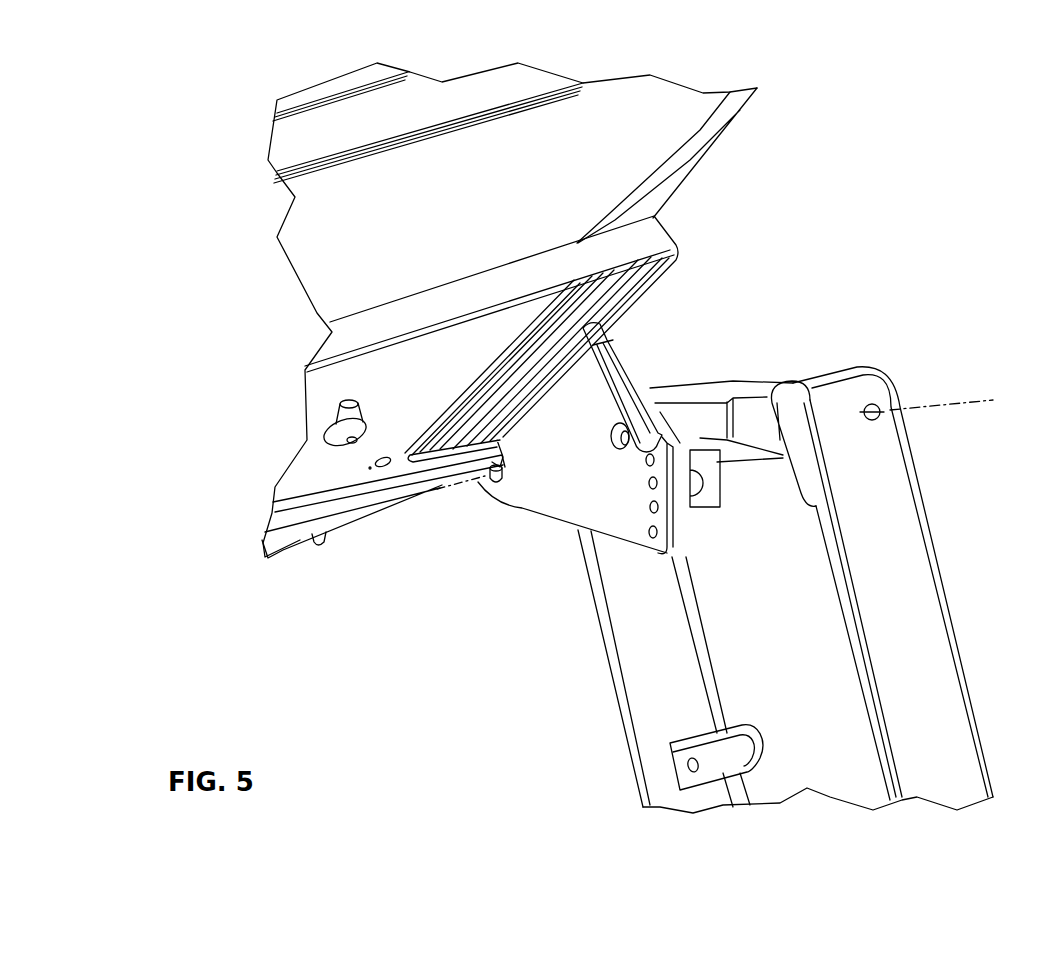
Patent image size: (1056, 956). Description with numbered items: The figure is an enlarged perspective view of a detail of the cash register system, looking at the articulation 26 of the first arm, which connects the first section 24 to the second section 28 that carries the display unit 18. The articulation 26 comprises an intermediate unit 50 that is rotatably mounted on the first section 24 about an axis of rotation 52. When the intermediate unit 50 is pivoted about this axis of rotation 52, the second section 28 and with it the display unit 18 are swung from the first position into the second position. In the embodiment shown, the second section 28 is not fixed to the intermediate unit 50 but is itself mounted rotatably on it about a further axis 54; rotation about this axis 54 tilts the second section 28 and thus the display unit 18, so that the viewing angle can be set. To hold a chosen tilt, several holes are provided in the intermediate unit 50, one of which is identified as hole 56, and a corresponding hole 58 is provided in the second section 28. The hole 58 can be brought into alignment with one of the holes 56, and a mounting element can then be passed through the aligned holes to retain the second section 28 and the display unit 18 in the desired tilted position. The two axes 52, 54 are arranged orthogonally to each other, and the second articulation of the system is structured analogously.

The display unit 18 is at (680, 175).
The second section 28 is at (647, 240).
The articulation 26 is at (848, 322).
The intermediate unit 50 is at (738, 385).
The axis of rotation 52 is at (967, 402).
The first section 24 is at (900, 548).
The further axis 54 is at (449, 486).
The hole 56 is at (653, 536).
The hole 58 is at (613, 446).